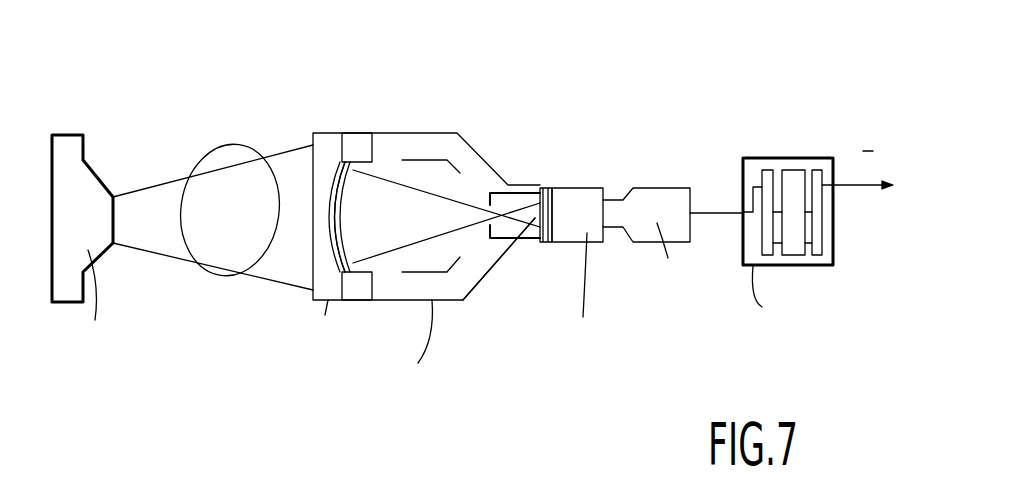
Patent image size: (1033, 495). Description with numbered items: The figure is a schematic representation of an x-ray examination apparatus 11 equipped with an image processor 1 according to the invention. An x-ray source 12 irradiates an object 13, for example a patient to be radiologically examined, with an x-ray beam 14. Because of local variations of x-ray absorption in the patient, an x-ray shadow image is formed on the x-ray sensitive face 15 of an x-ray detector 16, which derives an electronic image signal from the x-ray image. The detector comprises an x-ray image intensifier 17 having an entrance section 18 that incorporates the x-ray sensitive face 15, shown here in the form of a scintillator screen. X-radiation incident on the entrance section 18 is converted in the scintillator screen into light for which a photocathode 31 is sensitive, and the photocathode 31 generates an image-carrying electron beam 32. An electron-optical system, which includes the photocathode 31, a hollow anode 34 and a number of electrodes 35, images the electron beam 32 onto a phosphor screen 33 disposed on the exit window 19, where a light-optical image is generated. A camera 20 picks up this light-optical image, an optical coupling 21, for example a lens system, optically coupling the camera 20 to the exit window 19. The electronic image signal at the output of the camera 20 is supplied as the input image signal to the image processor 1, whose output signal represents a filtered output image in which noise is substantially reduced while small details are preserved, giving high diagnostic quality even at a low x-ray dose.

The x-ray examination apparatus 11 is at (192, 55).
The x-ray source 12 is at (68, 157).
The object 13 is at (237, 148).
The x-ray beam 14 is at (152, 254).
The x-ray sensitive face 15 is at (313, 222).
The x-ray image intensifier 17 is at (416, 133).
The entrance section 18 is at (383, 238).
The photocathode 31 is at (343, 193).
The electrodes 35 is at (452, 162).
The electron beam 32 is at (453, 217).
The hollow anode 34 is at (505, 190).
The phosphor screen 33 is at (526, 222).
The exit window 19 is at (548, 188).
The x-ray detector 16 is at (549, 248).
The optical coupling 21 is at (587, 188).
The camera 20 is at (670, 188).
The image processor 1 is at (793, 158).